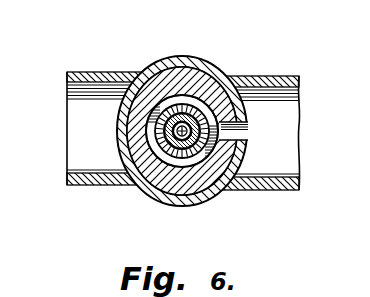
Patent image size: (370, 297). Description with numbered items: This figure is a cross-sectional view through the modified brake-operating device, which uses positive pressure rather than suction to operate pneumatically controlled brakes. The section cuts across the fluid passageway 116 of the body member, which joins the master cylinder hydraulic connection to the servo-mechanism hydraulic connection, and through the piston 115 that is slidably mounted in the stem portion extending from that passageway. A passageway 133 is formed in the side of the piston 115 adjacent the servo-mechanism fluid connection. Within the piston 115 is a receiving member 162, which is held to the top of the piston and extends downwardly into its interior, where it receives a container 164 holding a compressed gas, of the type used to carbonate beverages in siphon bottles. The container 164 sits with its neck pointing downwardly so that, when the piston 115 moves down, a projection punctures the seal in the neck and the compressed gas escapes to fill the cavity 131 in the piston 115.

The piston 115 is at (229, 90).
The fluid passageway 116 is at (80, 130).
The cavity 131 is at (167, 158).
The passageway 133 is at (247, 137).
The receiving member 162 is at (179, 110).
The container 164 is at (183, 146).